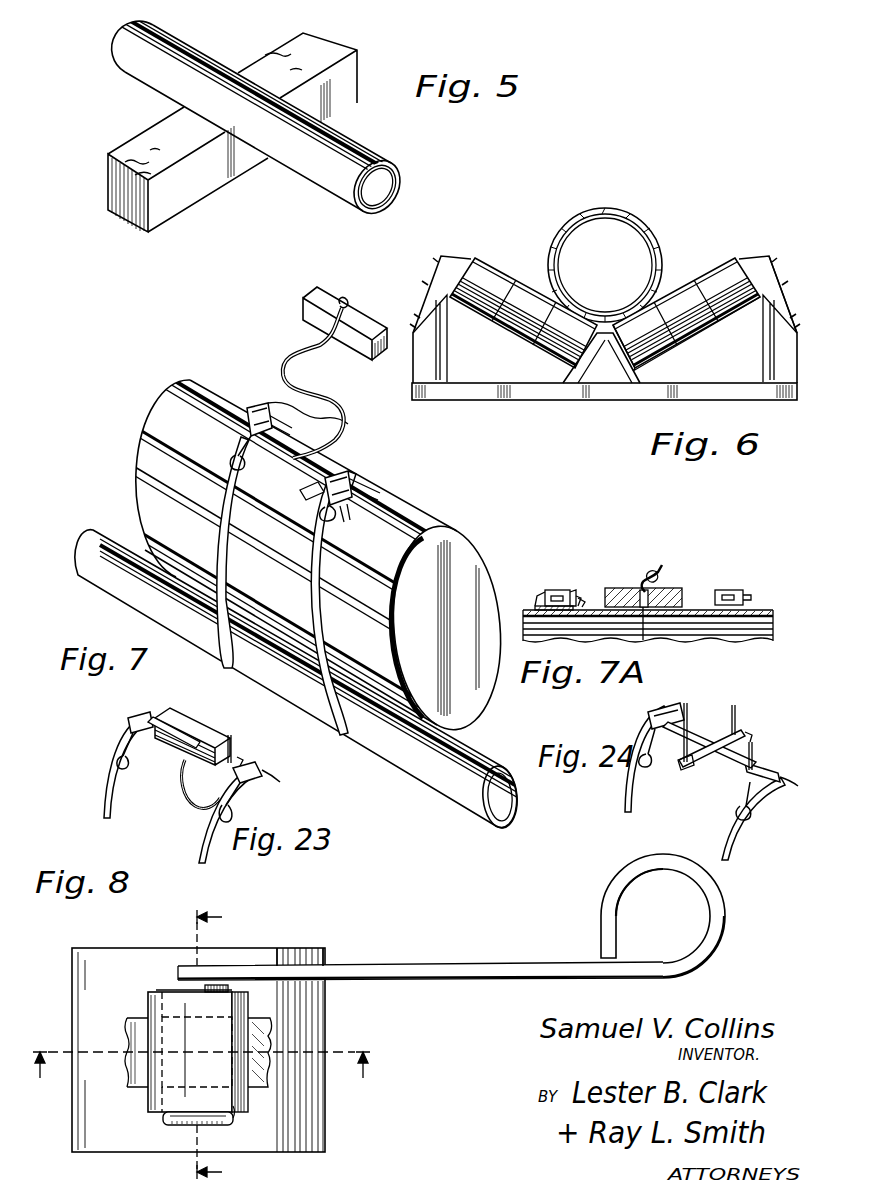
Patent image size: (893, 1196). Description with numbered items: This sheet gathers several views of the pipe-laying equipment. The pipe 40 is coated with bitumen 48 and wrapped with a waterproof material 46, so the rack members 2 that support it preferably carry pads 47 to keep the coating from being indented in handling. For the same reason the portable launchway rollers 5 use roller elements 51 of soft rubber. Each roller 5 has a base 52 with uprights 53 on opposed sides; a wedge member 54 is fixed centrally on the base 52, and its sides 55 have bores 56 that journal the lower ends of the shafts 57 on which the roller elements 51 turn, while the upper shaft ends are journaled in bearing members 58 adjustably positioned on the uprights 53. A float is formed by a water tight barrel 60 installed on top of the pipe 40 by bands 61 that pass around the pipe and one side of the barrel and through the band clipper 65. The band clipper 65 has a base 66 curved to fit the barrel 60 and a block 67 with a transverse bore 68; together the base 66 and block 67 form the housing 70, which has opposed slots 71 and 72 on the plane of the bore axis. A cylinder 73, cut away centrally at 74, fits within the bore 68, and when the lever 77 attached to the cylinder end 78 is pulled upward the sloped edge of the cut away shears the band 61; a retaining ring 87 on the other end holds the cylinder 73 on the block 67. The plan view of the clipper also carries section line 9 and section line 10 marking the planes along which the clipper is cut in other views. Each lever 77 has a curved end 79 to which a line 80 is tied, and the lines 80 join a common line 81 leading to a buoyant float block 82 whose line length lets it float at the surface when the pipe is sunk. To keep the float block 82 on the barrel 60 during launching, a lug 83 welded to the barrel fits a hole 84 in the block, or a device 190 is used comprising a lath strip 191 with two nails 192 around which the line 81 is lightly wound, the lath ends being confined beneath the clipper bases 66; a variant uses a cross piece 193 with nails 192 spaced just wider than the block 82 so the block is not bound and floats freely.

In FIG. 5, the rack member 2 is at (232, 154).
In FIG. 6, the roller 5 is at (758, 238).
In FIG. 8, the section line 9- 9 is at (226, 1045).
In FIG. 8, the section line 10- 10 is at (201, 1083).
In FIG. 5, the pipe 40 is at (398, 186).
In FIG. 7, the pipe 40 is at (218, 650).
In FIG. 5, the water proof material 46 is at (366, 216).
In FIG. 5, the pad 47 is at (150, 135).
In FIG. 5, the bitumen 48 is at (385, 217).
In FIG. 6, the roller element 51 is at (693, 288).
In FIG. 6, the base 52 is at (497, 400).
In FIG. 6, the upright 53 is at (770, 350).
In FIG. 6, the wedge member 54 is at (590, 370).
In FIG. 6, the side 55 is at (633, 378).
In FIG. 6, the bore 56 is at (618, 352).
In FIG. 6, the shaft 57 is at (731, 339).
In FIG. 6, the bearing member 58 is at (449, 262).
In FIG. 7, the barrel 60 is at (415, 520).
In FIG. 7A, the barrel 60 is at (768, 609).
In FIG. 7, the band 61 is at (323, 647).
In FIG. 7A, the band 61 is at (540, 604).
In FIG. 23, the band 61 is at (203, 832).
In FIG. 24, the band 61 is at (627, 790).
In FIG. 8, the band 61 is at (142, 1085).
In FIG. 7, the band clipper 65 is at (387, 485).
In FIG. 7A, the band clipper 65 is at (535, 589).
In FIG. 23, the band clipper 65 is at (250, 770).
In FIG. 24, the band clipper 65 is at (770, 770).
In FIG. 8, the band clipper 65 is at (70, 966).
In FIG. 7, the base 66 is at (273, 423).
In FIG. 7A, the base 66 is at (538, 605).
In FIG. 23, the base 66 is at (248, 786).
In FIG. 24, the base 66 is at (778, 782).
In FIG. 8, the base 66 is at (312, 950).
In FIG. 7, the block 67 is at (347, 473).
In FIG. 7A, the block 67 is at (561, 590).
In FIG. 8, the block 67 is at (147, 1005).
In FIG. 8, the bore 68 is at (236, 1049).
In FIG. 8, the band clipper housing 70 is at (183, 1032).
In FIG. 8, the slot 71 is at (240, 1026).
In FIG. 8, the slot 72 is at (153, 1033).
In FIG. 7A, the cylinder 73 is at (579, 594).
In FIG. 8, the cylinder 73 is at (165, 990).
In FIG. 8, the cut away section 74 is at (172, 1062).
In FIG. 7, the lever 77 is at (345, 523).
In FIG. 7A, the lever 77 is at (586, 598).
In FIG. 8, the lever 77 is at (451, 903).
In FIG. 8, the cylinder end 78 is at (177, 986).
In FIG. 7, the curved end 79 is at (337, 527).
In FIG. 8, the curved end 79 is at (648, 862).
In FIG. 7, the line 80 is at (303, 498).
In FIG. 7, the line 81 is at (347, 420).
In FIG. 7A, the line 81 is at (668, 558).
In FIG. 23, the line 81 is at (204, 770).
In FIG. 7, the float block 82 is at (366, 324).
In FIG. 7A, the float block 82 is at (622, 588).
In FIG. 23, the float block 82 is at (206, 728).
In FIG. 7A, the lug 83 is at (645, 640).
In FIG. 7A, the hole 84 is at (660, 588).
In FIG. 8, the retaining ring 87 is at (233, 1118).
In FIG. 23, the device 190 is at (241, 758).
In FIG. 24, the device 190 is at (748, 732).
In FIG. 23, the lath strip 191 is at (170, 740).
In FIG. 24, the lath strip 191 is at (702, 736).
In FIG. 23, the nail 192 is at (230, 738).
In FIG. 24, the nail 192 is at (737, 708).
In FIG. 24, the cross piece 193 is at (700, 765).